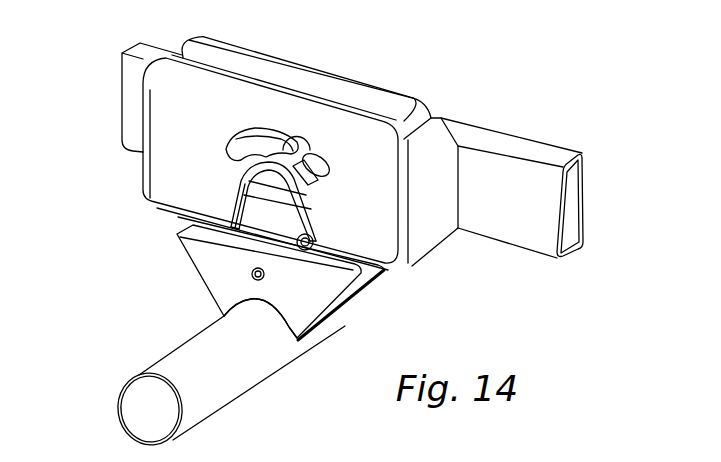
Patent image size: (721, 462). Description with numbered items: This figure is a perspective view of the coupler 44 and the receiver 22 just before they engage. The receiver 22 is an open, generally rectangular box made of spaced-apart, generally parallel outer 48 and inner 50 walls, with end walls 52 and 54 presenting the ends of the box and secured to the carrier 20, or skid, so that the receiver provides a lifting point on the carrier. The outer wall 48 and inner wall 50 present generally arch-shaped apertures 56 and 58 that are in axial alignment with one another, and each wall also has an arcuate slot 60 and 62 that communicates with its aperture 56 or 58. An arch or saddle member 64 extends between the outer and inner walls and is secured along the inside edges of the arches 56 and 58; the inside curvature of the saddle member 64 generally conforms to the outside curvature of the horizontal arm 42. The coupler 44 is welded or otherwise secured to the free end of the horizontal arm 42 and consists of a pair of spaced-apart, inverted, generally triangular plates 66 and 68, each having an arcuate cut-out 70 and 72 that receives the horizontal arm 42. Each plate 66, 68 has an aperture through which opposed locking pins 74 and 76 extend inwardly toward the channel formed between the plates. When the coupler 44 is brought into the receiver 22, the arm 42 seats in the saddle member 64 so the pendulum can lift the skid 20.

The carrier 20 is at (498, 142).
The receiver 22 is at (411, 40).
The horizontal arm 42 is at (243, 390).
The coupler 44 is at (118, 325).
The outer wall 48 is at (286, 78).
The inner wall 50 is at (251, 53).
The end wall 52 is at (434, 258).
The end wall 54 is at (142, 181).
The arch-shaped aperture 56 is at (241, 188).
The arch-shaped aperture 58 is at (290, 146).
The arcuate slot 60 is at (320, 170).
The arcuate slot 62 is at (238, 133).
The saddle member 64 is at (318, 157).
The triangular plate 66 is at (199, 283).
The triangular plate 68 is at (383, 279).
The arcuate cut-out 70 is at (268, 312).
The arcuate cut-out 72 is at (341, 308).
The locking pin 74 is at (266, 276).
The locking pin 76 is at (297, 236).